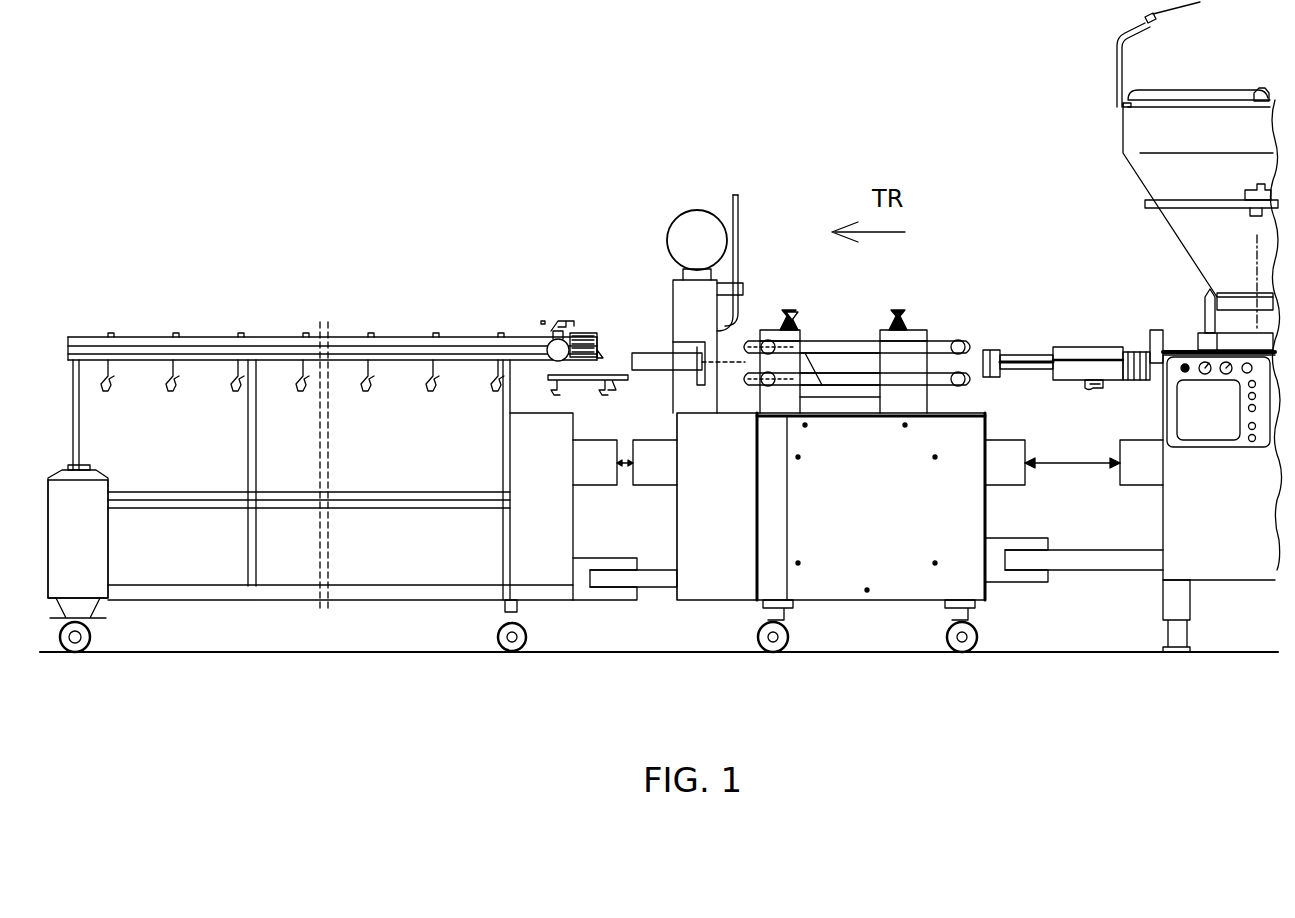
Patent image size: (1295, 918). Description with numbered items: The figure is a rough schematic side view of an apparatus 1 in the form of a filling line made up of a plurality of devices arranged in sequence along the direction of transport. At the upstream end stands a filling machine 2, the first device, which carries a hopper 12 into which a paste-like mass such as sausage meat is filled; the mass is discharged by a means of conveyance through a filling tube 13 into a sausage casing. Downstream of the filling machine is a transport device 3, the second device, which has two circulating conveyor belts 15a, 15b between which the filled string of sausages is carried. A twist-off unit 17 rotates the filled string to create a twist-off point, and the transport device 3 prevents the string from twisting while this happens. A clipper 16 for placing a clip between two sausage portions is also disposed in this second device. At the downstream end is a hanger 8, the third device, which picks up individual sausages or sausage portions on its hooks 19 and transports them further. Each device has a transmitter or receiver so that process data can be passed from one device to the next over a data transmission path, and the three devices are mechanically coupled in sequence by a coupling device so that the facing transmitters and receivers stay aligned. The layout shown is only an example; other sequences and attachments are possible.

The production line / system 1 is at (659, 371).
The filling machine 2 is at (1215, 584).
The transport device 3 is at (884, 604).
The hanger 8 is at (258, 326).
The hopper 12 is at (1123, 174).
The filling tube 13 is at (1022, 372).
The conveyor belt 15a is at (836, 341).
The conveyor belt 15b is at (863, 402).
The clipper 16 is at (696, 211).
The twist-off unit 17 is at (1073, 345).
The hooks 19 is at (176, 390).